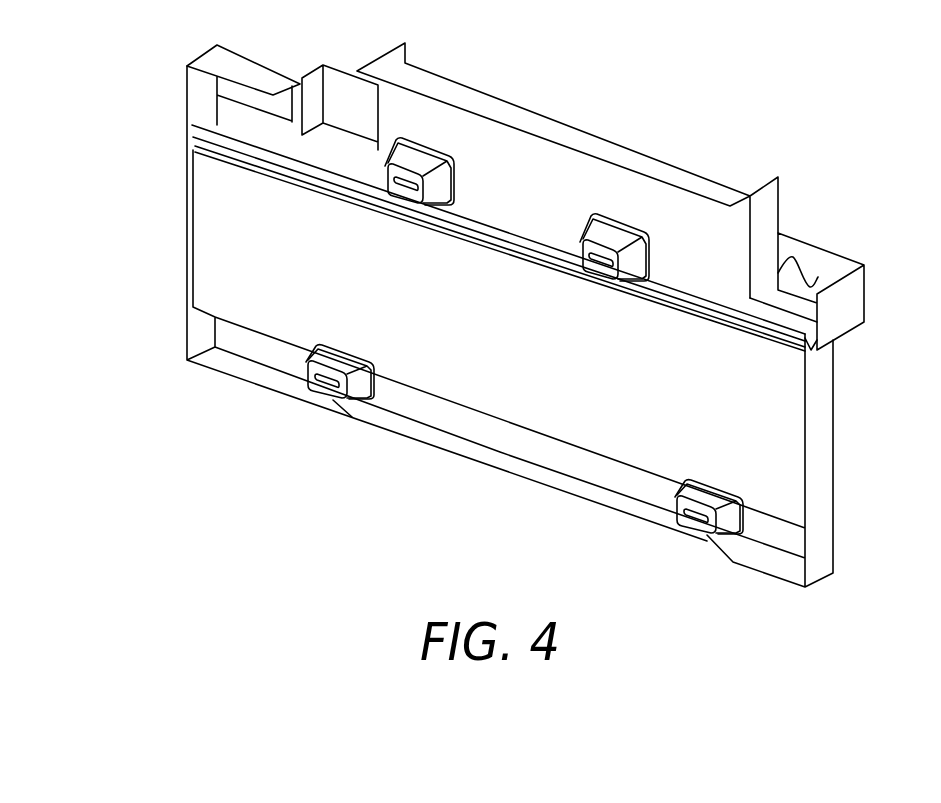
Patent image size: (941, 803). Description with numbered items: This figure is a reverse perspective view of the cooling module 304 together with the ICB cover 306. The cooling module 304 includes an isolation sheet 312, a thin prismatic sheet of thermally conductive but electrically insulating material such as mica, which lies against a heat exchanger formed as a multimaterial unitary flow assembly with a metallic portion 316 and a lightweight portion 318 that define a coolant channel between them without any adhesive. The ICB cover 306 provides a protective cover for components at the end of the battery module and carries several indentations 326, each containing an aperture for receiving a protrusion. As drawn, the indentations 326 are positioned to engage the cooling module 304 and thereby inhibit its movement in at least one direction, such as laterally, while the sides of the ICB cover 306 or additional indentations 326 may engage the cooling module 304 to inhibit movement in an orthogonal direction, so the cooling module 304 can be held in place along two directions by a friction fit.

The cooling module 304 is at (753, 320).
The ICB cover 306 is at (513, 113).
The isolation sheet 312 is at (203, 131).
The metallic portion 316 is at (208, 126).
The lightweight portion 318 is at (213, 122).
The indentations 326 is at (340, 402).